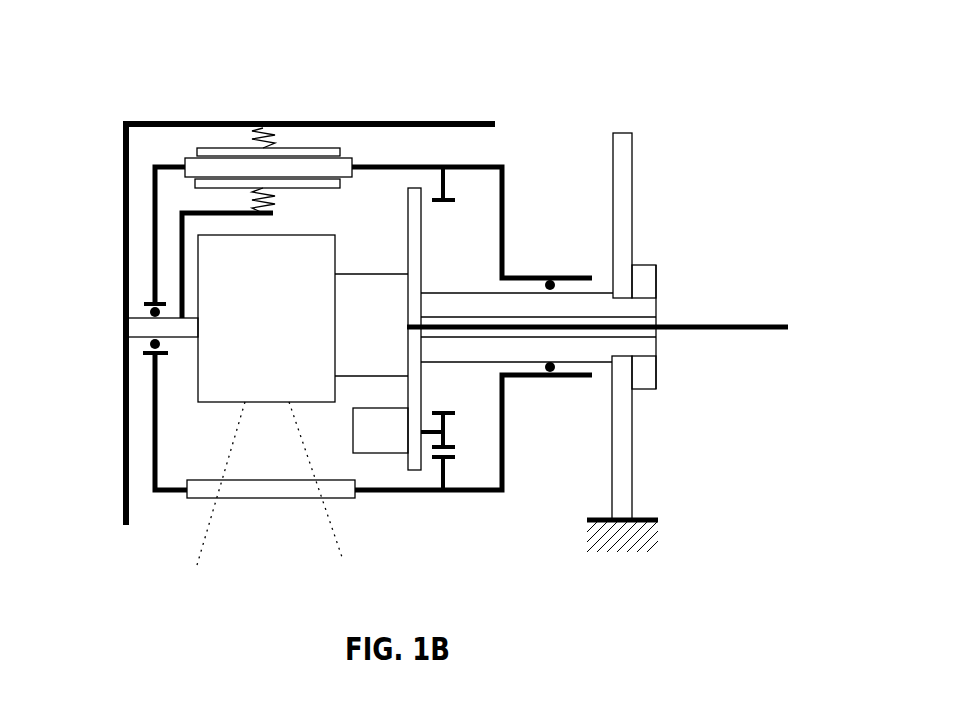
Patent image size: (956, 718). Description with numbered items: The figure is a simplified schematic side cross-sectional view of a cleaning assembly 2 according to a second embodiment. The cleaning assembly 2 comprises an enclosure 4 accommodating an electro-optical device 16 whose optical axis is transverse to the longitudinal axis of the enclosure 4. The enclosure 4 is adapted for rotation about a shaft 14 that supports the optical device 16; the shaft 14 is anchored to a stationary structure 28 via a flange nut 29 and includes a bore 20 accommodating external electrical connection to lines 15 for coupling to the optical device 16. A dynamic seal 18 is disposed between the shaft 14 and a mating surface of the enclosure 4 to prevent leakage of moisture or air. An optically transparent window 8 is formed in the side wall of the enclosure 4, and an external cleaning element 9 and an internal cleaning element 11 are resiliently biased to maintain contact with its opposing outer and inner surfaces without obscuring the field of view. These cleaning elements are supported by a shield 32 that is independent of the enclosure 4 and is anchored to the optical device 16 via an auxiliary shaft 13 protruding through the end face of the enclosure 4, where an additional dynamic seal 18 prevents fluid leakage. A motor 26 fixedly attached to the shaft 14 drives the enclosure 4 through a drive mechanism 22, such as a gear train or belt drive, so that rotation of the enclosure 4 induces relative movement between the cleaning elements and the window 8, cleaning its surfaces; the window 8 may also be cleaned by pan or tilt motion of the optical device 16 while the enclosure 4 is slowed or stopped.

The cleaning assembly 2 is at (527, 83).
The enclosure 4 is at (398, 492).
The optically transparent window 8 is at (248, 168).
The external cleaning element 9 is at (308, 148).
The internal cleaning element 11 is at (322, 185).
The auxiliary shaft 13 is at (142, 328).
The shaft 14 is at (597, 303).
The lines 15 is at (730, 323).
The electro-optical device 16 is at (235, 280).
The dynamic seal 18 is at (145, 310).
The bore 20 is at (640, 320).
The drive mechanism 22 is at (445, 472).
The motor 26 is at (383, 430).
The stationary structure 28 is at (622, 248).
The flange nut 29 is at (640, 372).
The shield 32 is at (208, 125).